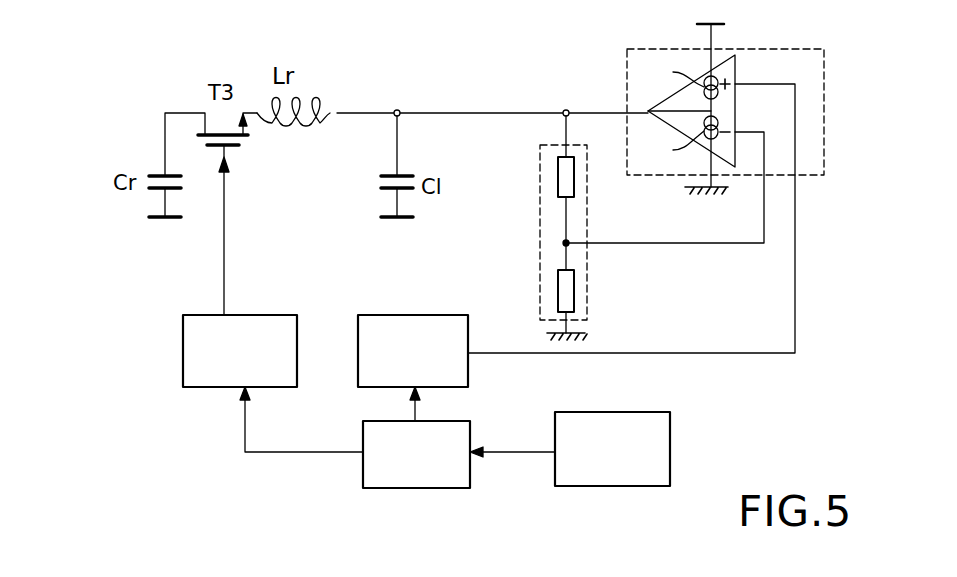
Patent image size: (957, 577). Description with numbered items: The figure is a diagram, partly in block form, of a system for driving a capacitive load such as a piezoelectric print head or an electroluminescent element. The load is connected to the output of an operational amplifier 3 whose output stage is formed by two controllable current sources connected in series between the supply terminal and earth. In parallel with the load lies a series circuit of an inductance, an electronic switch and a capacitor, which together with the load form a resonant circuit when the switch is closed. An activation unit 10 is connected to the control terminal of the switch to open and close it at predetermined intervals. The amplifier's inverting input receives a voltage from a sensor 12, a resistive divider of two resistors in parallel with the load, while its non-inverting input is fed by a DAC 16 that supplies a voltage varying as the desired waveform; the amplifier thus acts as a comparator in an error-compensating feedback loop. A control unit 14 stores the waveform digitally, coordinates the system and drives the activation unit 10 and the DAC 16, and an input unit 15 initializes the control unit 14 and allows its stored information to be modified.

The operational amplifier 3 is at (820, 70).
The activation unit 10 is at (205, 380).
The sensor 12 is at (536, 262).
The control unit 14 is at (372, 475).
The input unit 15 is at (655, 447).
The digital-analog convertor (DAC) 16 is at (406, 315).